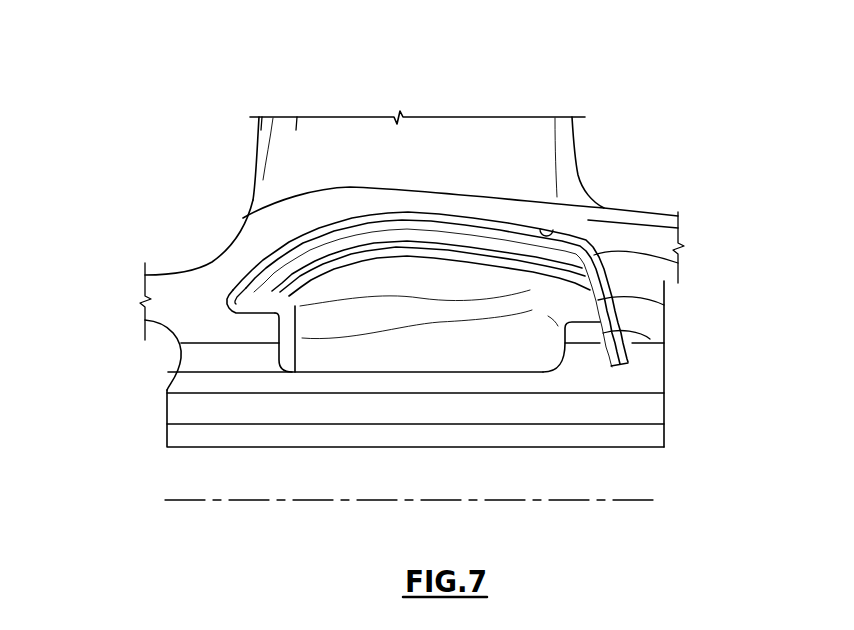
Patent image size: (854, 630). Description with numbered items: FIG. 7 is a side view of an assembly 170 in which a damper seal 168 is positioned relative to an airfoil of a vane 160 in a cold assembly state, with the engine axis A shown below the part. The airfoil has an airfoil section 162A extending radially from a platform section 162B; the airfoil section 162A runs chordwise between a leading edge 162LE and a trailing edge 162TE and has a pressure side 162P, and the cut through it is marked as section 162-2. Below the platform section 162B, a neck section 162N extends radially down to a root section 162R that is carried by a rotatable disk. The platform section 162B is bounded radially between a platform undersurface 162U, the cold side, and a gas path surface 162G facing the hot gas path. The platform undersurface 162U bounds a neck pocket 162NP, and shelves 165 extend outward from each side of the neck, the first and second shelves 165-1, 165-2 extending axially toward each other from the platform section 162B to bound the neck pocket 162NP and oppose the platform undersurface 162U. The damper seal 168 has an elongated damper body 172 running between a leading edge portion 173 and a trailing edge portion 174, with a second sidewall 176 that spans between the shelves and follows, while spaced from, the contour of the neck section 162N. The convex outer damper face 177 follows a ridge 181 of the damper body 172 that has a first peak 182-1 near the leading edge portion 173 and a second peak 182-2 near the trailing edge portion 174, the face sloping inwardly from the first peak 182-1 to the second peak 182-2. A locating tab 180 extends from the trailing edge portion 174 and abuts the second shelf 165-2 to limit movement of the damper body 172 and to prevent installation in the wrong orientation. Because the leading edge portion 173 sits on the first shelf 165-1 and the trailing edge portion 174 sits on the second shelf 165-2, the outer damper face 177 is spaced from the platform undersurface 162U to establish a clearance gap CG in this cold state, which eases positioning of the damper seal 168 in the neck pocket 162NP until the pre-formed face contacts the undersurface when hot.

The assembly 170 is at (572, 62).
The vane 160 is at (211, 115).
The airfoil section 162-2 is at (288, 103).
The leading edge 162LE is at (258, 152).
The trailing edge 162TE is at (577, 170).
The airfoil section 162A is at (568, 142).
The pressure side 162P is at (516, 133).
The platform undersurface 162U is at (550, 235).
The gas path surface 162G is at (642, 218).
The platform section 162B is at (177, 290).
The root section 162R is at (178, 407).
The neck section 162N is at (363, 355).
The neck pocket 162NP is at (456, 358).
The shelves 165 is at (148, 326).
The first shelf 165-1 is at (178, 360).
The second shelf 165-2 is at (608, 358).
The damper seal 168 is at (446, 205).
The damper body 172 is at (293, 250).
The leading edge portion 173 is at (248, 292).
The trailing edge portion 174 is at (667, 313).
The second sidewall 176 is at (533, 303).
The outer damper face 177 is at (475, 238).
The locating tab 180 is at (667, 345).
The ridge 181 is at (375, 222).
The first peak 182-1 is at (357, 225).
The second peak 182-2 is at (667, 283).
The clearance gap CG is at (428, 200).
The engine axis A is at (645, 500).